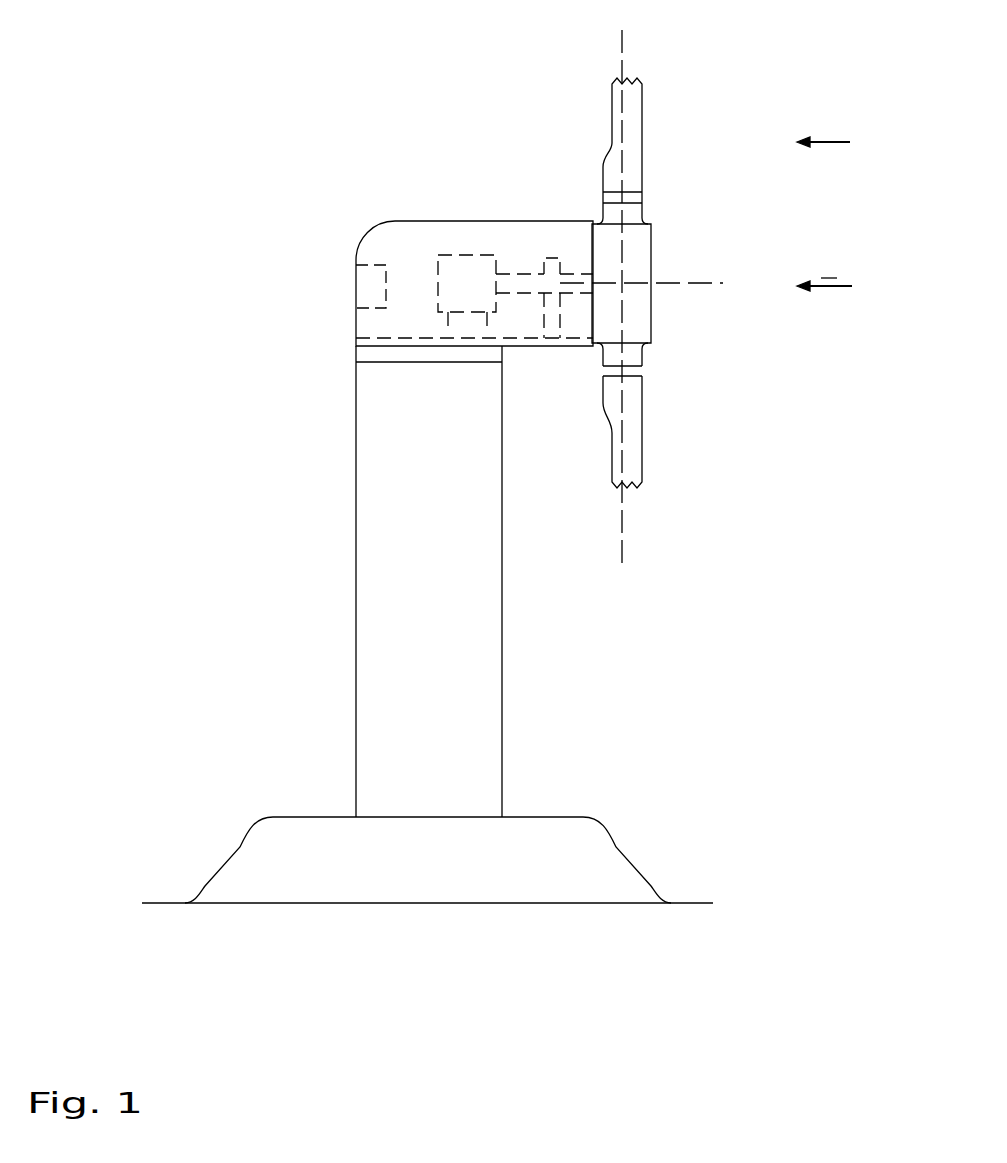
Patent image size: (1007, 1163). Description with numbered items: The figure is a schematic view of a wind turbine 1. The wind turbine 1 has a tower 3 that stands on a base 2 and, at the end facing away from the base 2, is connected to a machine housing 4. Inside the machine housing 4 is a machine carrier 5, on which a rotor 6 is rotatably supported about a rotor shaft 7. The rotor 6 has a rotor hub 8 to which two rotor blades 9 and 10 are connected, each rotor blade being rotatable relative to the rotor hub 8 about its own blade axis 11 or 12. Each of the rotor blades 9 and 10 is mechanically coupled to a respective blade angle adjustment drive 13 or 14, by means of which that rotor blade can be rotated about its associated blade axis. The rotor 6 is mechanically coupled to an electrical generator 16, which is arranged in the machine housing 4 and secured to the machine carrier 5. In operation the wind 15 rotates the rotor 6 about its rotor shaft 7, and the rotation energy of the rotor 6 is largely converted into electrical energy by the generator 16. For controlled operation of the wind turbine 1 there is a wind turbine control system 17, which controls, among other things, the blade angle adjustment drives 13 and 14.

The wind turbine 1 is at (216, 90).
The base 2 is at (240, 853).
The tower 3 is at (362, 615).
The machine housing 4 is at (413, 220).
The machine carrier 5 is at (368, 337).
The rotor 6 is at (652, 223).
The rotor shaft 7 is at (708, 283).
The rotor hub 8 is at (648, 323).
The rotor blade 9 is at (612, 113).
The rotor blade 10 is at (638, 440).
The blade axis 11 is at (622, 41).
The blade axis 12 is at (622, 530).
The blade angle adjustment drive 13 is at (603, 197).
The blade angle adjustment drive 14 is at (636, 372).
The wind 15 is at (822, 142).
The electrical generator 16 is at (448, 255).
The wind turbine control system 17 is at (367, 265).